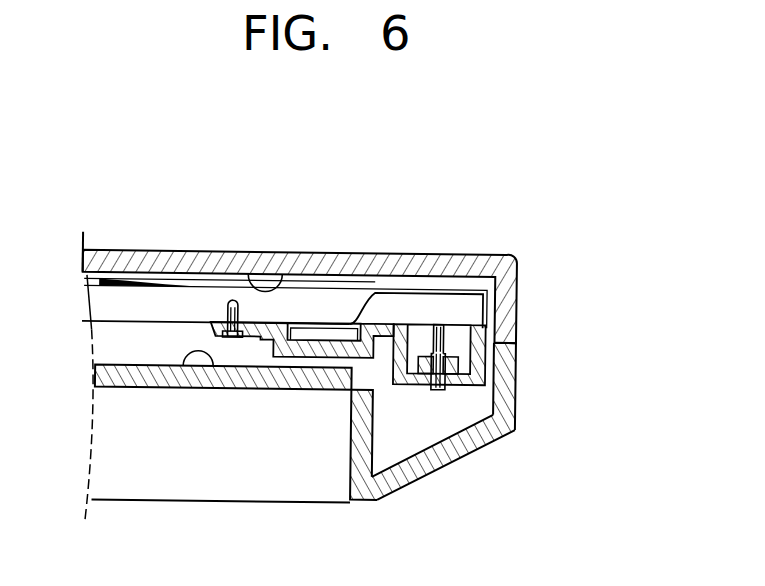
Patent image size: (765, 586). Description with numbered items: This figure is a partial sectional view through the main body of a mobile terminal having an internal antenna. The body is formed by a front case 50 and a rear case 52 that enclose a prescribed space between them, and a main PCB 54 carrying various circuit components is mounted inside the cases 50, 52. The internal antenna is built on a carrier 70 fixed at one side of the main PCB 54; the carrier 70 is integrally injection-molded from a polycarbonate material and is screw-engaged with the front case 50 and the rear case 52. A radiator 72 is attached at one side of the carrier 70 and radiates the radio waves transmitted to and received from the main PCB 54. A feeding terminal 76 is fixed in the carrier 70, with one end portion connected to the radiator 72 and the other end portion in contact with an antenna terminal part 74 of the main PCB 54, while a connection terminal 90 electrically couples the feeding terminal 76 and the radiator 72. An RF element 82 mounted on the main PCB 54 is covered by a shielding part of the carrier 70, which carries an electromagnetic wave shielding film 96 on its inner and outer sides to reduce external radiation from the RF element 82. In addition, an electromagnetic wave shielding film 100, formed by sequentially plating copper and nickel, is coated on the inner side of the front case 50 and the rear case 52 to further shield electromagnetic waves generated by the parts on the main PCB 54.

The front case 50 is at (509, 298).
The rear case 52 is at (509, 374).
The main PCB 54 is at (141, 312).
The carrier 70 is at (408, 386).
The radiator 72 is at (512, 436).
The antenna terminal part 74 is at (440, 323).
The feeding terminal 76 is at (443, 392).
The RF element 82 is at (325, 332).
The connection terminal 90 is at (461, 386).
The electromagnetic wave shielding film 96 is at (352, 316).
The electromagnetic wave shielding film 100 is at (293, 266).